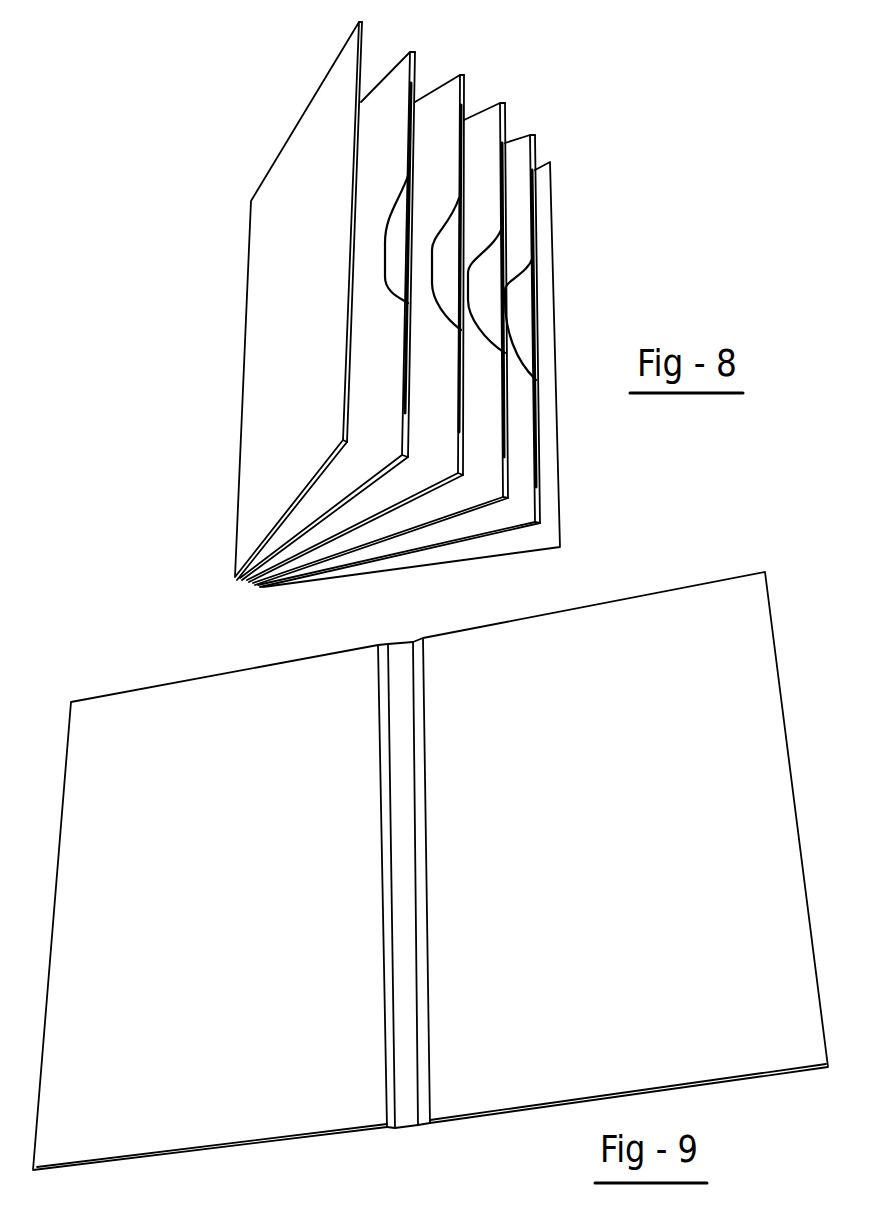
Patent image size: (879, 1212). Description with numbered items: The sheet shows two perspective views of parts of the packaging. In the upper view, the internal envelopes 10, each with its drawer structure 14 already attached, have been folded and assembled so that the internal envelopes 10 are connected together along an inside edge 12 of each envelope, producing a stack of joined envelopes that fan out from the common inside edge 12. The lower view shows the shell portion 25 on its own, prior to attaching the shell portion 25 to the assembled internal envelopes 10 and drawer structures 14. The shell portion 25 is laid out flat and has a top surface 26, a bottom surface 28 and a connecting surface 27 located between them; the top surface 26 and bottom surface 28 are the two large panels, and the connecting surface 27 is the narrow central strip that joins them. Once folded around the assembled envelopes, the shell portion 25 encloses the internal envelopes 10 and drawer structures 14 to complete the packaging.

In FIG. 8, the internal envelope 10 is at (415, 57).
In FIG. 8, the inside edge 12 is at (245, 326).
In FIG. 8, the drawer structure 14 is at (410, 130).
In FIG. 9, the shell portion 25 is at (425, 836).
In FIG. 9, the top surface 26 is at (778, 663).
In FIG. 9, the connecting surface 27 is at (402, 658).
In FIG. 9, the bottom surface 28 is at (65, 767).